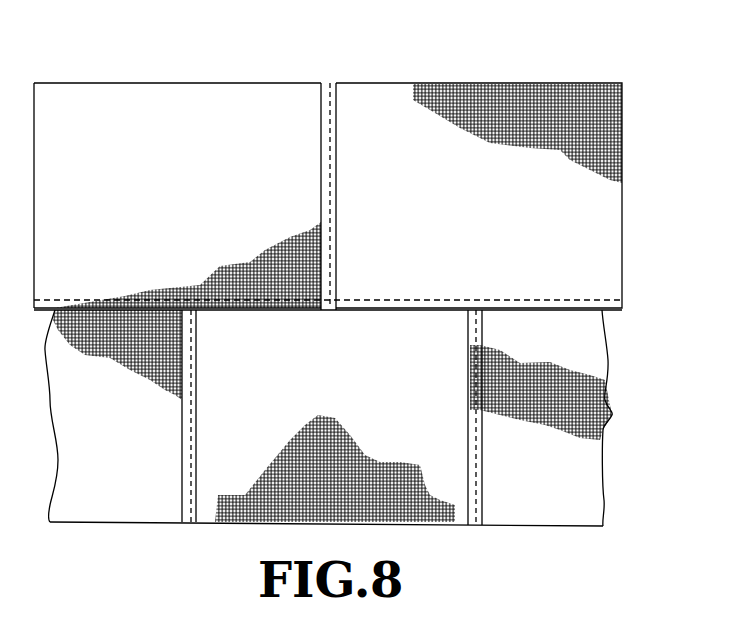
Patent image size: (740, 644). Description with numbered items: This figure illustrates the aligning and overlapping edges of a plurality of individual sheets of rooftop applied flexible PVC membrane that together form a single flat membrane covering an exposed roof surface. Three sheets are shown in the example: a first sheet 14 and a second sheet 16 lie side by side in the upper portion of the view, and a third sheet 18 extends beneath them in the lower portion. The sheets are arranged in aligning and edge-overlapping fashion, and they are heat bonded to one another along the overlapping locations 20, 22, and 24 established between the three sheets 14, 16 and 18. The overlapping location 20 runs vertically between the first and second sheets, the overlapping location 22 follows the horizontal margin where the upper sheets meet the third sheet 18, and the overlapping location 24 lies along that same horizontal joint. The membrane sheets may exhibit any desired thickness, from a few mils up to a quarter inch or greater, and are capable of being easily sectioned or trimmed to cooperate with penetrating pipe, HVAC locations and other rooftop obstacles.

The individual sheet 14 is at (152, 115).
The individual sheet 16 is at (413, 118).
The individual sheet 18 is at (217, 485).
The overlapping location 20 is at (322, 122).
The overlapping location 22 is at (408, 300).
The overlapping location 24 is at (222, 312).